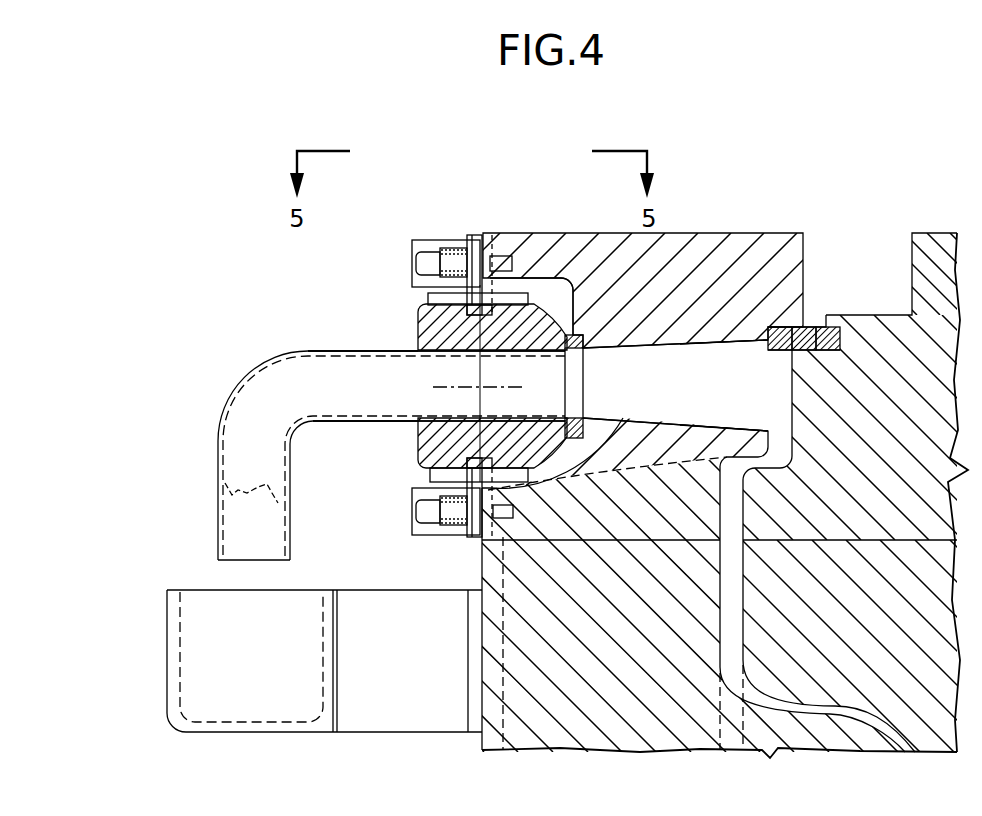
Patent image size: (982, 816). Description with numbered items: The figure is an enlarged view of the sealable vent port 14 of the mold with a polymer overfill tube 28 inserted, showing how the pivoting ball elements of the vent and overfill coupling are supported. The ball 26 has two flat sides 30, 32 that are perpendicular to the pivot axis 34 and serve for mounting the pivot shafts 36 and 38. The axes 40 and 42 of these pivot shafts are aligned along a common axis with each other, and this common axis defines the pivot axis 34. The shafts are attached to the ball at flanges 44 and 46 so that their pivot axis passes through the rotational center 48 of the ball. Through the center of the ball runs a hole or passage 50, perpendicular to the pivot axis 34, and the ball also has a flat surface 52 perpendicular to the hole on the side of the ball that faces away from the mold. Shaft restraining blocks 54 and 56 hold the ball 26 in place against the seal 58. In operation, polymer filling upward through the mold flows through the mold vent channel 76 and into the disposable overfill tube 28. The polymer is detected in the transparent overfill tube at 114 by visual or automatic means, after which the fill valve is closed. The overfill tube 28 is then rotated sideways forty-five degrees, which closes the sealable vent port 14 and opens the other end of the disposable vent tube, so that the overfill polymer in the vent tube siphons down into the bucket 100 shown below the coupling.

The vent port 14 is at (320, 343).
The ball 26 is at (569, 262).
The overfill tube 28 is at (218, 440).
The flat side 30 is at (418, 323).
The flat side 32 is at (418, 470).
The pivot axis 34 is at (470, 388).
The pivot shaft 36 is at (512, 278).
The pivot shaft 38 is at (598, 462).
The axis of pivot shaft 40 is at (428, 290).
The axis of pivot shaft 42 is at (408, 484).
The flange 44 is at (428, 300).
The flange 46 is at (410, 478).
The rotational center 48 is at (486, 387).
The passage 50 is at (448, 353).
The flat surface 52 is at (410, 441).
The shaft restraining block 54 is at (427, 238).
The shaft restraining block 56 is at (420, 537).
The seal 58 is at (590, 350).
The mold vent channel 76 is at (675, 349).
The bucket 100 is at (167, 590).
The polymer detection point 114 is at (263, 488).